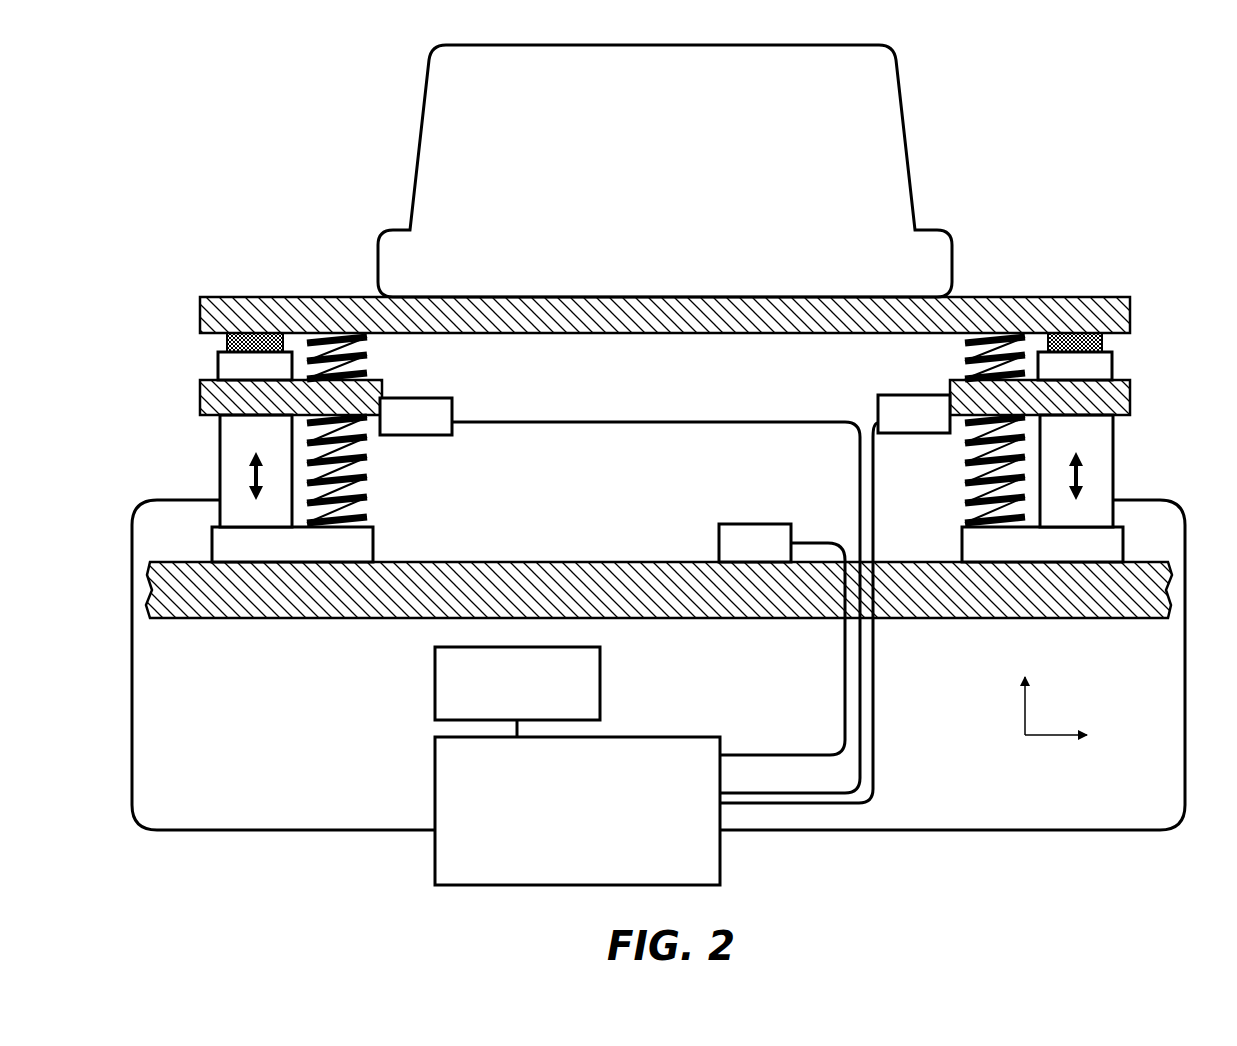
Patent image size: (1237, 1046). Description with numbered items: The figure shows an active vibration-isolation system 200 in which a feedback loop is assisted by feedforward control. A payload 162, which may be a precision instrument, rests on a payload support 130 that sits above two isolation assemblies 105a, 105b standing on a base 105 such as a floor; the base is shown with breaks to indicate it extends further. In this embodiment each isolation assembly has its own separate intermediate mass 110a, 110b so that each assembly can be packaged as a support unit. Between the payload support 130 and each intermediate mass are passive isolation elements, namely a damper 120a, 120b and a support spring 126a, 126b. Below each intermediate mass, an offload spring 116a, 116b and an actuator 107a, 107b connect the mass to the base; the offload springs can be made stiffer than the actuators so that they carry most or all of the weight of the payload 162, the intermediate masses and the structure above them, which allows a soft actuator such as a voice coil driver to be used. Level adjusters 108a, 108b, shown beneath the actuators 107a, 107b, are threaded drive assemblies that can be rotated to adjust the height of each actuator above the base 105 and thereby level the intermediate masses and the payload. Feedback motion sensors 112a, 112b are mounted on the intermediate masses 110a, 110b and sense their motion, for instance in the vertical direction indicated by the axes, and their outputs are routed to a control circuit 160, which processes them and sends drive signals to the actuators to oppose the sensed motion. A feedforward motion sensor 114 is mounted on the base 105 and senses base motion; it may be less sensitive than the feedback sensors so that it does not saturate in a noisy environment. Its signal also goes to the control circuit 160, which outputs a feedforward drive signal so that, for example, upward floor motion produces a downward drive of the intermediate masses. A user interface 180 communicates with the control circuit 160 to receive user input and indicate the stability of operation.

The active vibration-isolation system 200 is at (1152, 124).
The payload support 130 is at (240, 297).
The payload 162 is at (665, 171).
The damper 120a is at (225, 350).
The damper 120b is at (1113, 362).
The intermediate mass 110a is at (200, 398).
The intermediate mass 110b is at (1130, 395).
The support spring 126a is at (372, 372).
The support spring 126b is at (967, 362).
The feedback motion sensor 112a is at (416, 416).
The feedback motion sensor 112b is at (914, 414).
The offload spring 116a is at (367, 485).
The offload spring 116b is at (965, 483).
The actuator 107a is at (256, 471).
The actuator 107b is at (1076, 471).
The level adjuster 108a is at (292, 544).
The level adjuster 108b is at (1042, 544).
The isolation assembly 105a is at (300, 436).
The isolation assembly 105b is at (1057, 443).
The base 105 is at (648, 560).
The feedforward motion sensor 114 is at (755, 543).
The user interface 180 is at (517, 692).
The control circuit 160 is at (656, 653).